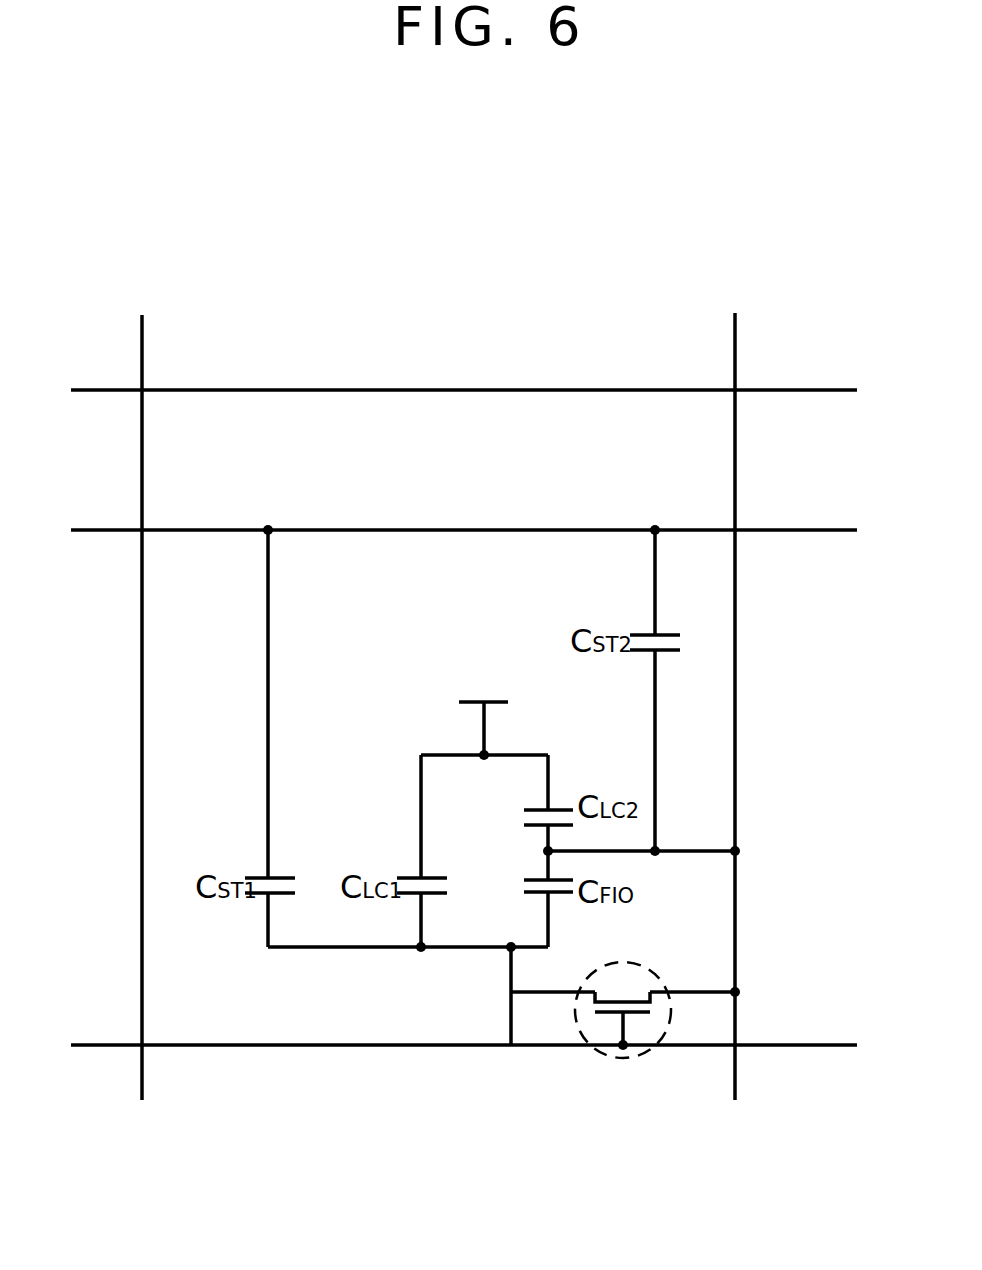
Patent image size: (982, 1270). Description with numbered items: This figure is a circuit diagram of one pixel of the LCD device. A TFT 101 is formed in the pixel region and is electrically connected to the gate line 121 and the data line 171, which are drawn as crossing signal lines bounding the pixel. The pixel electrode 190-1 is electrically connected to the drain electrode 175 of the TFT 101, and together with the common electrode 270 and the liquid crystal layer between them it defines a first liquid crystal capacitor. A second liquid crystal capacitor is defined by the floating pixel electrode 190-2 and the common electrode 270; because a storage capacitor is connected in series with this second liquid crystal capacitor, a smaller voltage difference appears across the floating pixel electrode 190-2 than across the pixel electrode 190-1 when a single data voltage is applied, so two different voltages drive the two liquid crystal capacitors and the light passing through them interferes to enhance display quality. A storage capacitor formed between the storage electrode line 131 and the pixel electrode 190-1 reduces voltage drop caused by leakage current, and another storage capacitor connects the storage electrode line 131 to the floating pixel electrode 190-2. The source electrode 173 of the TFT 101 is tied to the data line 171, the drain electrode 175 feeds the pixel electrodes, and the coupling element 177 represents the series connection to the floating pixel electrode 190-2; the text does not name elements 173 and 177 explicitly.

The gate line 121 is at (355, 389).
The storage electrode line 131 is at (353, 529).
The data line 171 is at (141, 742).
The common electrode 270 is at (540, 810).
The pixel electrode 190-1 is at (278, 895).
The floating pixel electrode 190-2 is at (558, 828).
The coupling electrode 177 is at (557, 895).
The TFT 101 is at (640, 963).
The source electrode 173 is at (683, 994).
The drain electrode 175 is at (553, 1000).